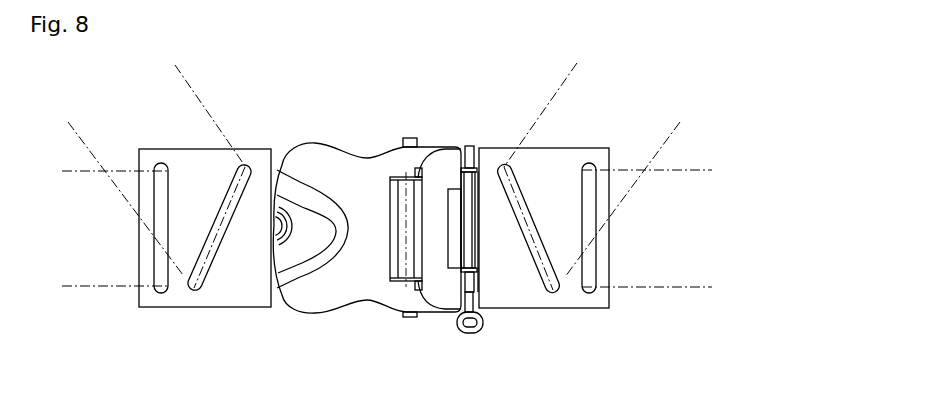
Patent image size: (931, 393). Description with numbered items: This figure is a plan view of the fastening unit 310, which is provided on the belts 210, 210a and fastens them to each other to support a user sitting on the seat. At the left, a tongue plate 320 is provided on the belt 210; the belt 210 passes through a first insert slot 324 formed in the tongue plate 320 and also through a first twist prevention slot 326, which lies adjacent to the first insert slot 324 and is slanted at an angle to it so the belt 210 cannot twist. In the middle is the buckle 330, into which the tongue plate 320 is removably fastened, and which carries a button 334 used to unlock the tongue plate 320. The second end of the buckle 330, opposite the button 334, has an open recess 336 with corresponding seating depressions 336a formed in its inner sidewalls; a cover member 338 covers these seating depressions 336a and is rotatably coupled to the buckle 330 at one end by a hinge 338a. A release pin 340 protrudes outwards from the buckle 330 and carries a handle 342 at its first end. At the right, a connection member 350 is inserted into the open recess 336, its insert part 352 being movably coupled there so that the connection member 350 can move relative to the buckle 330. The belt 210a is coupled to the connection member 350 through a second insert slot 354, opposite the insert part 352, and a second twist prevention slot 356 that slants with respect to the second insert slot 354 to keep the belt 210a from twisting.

The fastening unit 310 is at (60, 60).
The belt 210 is at (95, 284).
The belt 210a is at (655, 280).
The tongue plate 320 is at (247, 303).
The first insert slot 324 is at (159, 283).
The first twist prevention slot 326 is at (203, 273).
The buckle 330 is at (337, 300).
The button 334 is at (300, 203).
The cover member 338 is at (400, 147).
The hinge 338a is at (408, 255).
The open recess 336 is at (455, 222).
The seating depression 336a is at (455, 278).
The release pin 340 is at (449, 186).
The handle 342 is at (472, 338).
The connection member 350 is at (528, 297).
The insert part 352 is at (480, 197).
The second insert slot 354 is at (590, 188).
The second twist prevention slot 356 is at (515, 195).